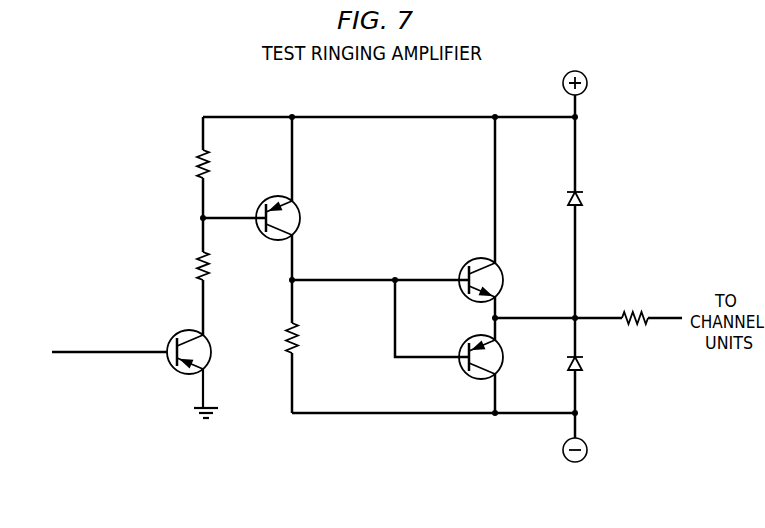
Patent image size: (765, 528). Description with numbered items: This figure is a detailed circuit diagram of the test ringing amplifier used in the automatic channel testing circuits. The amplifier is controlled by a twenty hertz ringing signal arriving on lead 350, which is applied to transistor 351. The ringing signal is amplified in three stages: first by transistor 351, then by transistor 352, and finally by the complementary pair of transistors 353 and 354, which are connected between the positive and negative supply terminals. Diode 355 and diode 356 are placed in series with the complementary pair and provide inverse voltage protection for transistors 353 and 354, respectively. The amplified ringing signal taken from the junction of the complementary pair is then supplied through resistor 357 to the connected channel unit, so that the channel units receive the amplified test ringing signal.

The lead 350 is at (101, 378).
The transistor 351 is at (204, 352).
The transistor 352 is at (294, 218).
The transistor of complementary pair 353 is at (497, 280).
The transistor of complementary pair 354 is at (497, 357).
The diode 355 is at (592, 200).
The diode 356 is at (592, 365).
The resistor 357 is at (634, 305).